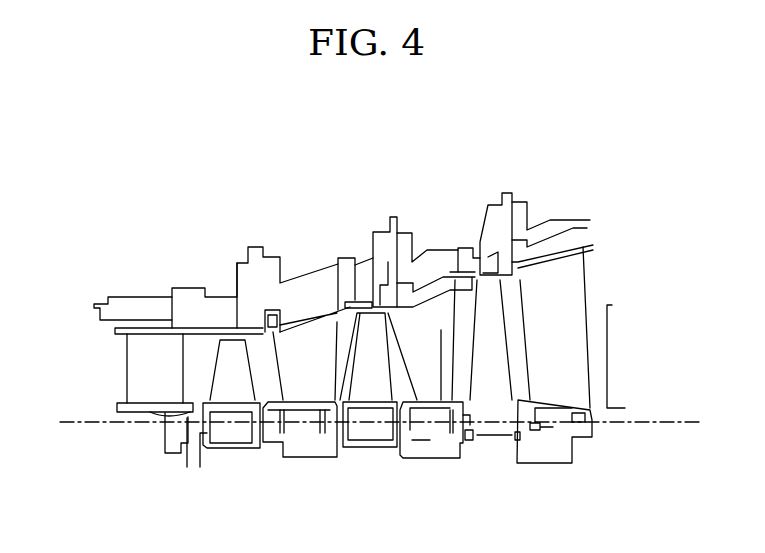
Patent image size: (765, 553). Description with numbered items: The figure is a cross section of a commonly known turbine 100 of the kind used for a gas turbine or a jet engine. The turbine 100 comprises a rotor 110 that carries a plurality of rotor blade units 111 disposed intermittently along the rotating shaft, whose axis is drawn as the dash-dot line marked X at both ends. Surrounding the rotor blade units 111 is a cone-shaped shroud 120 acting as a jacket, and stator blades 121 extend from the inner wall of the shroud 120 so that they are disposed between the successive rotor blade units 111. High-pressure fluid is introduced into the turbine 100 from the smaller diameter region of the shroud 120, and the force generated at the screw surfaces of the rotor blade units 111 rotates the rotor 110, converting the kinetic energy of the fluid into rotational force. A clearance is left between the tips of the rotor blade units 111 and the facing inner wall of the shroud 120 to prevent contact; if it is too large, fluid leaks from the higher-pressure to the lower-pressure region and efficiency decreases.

The turbine 100 is at (90, 249).
The rotor 110 is at (230, 450).
The rotor blade unit 111 is at (231, 350).
The shroud 120 is at (182, 287).
The stator blade 121 is at (147, 388).